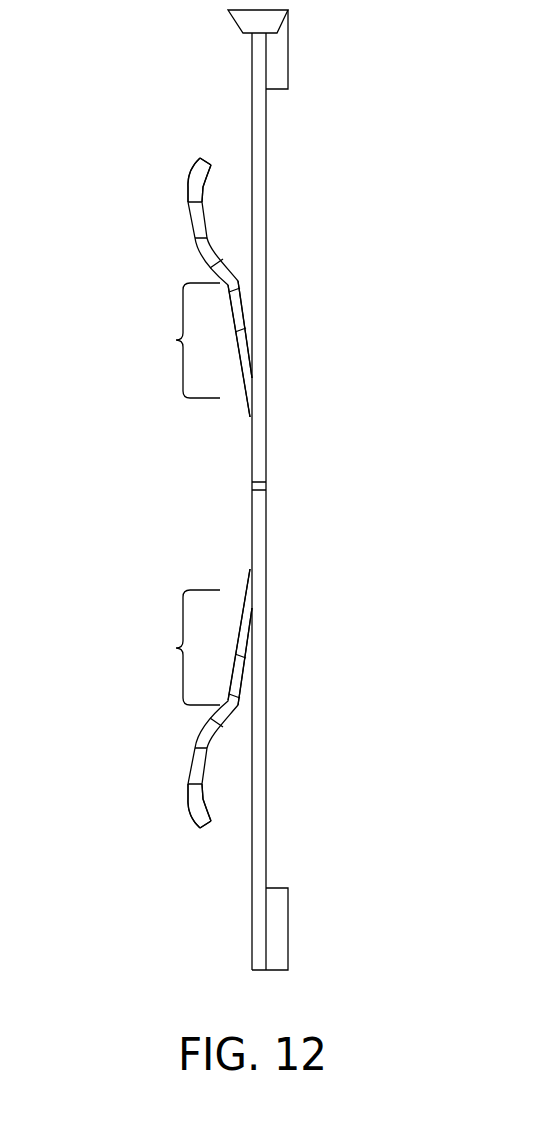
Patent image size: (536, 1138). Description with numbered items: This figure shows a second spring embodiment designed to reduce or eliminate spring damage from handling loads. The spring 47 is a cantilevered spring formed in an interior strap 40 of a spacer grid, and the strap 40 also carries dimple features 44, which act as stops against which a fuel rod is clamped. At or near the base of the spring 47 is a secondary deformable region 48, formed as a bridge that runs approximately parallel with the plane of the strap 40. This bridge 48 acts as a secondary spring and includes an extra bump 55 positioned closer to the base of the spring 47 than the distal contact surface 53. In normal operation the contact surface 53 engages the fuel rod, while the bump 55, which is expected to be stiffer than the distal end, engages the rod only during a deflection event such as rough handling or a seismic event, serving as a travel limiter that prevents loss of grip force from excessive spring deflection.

The interior strap 40 is at (250, 113).
The dimple feature 44 is at (280, 942).
The second embodiment spring 47 is at (203, 263).
The secondary deformable region 48 is at (175, 340).
The spring contact surface 53 is at (190, 215).
The bump 55 is at (238, 372).